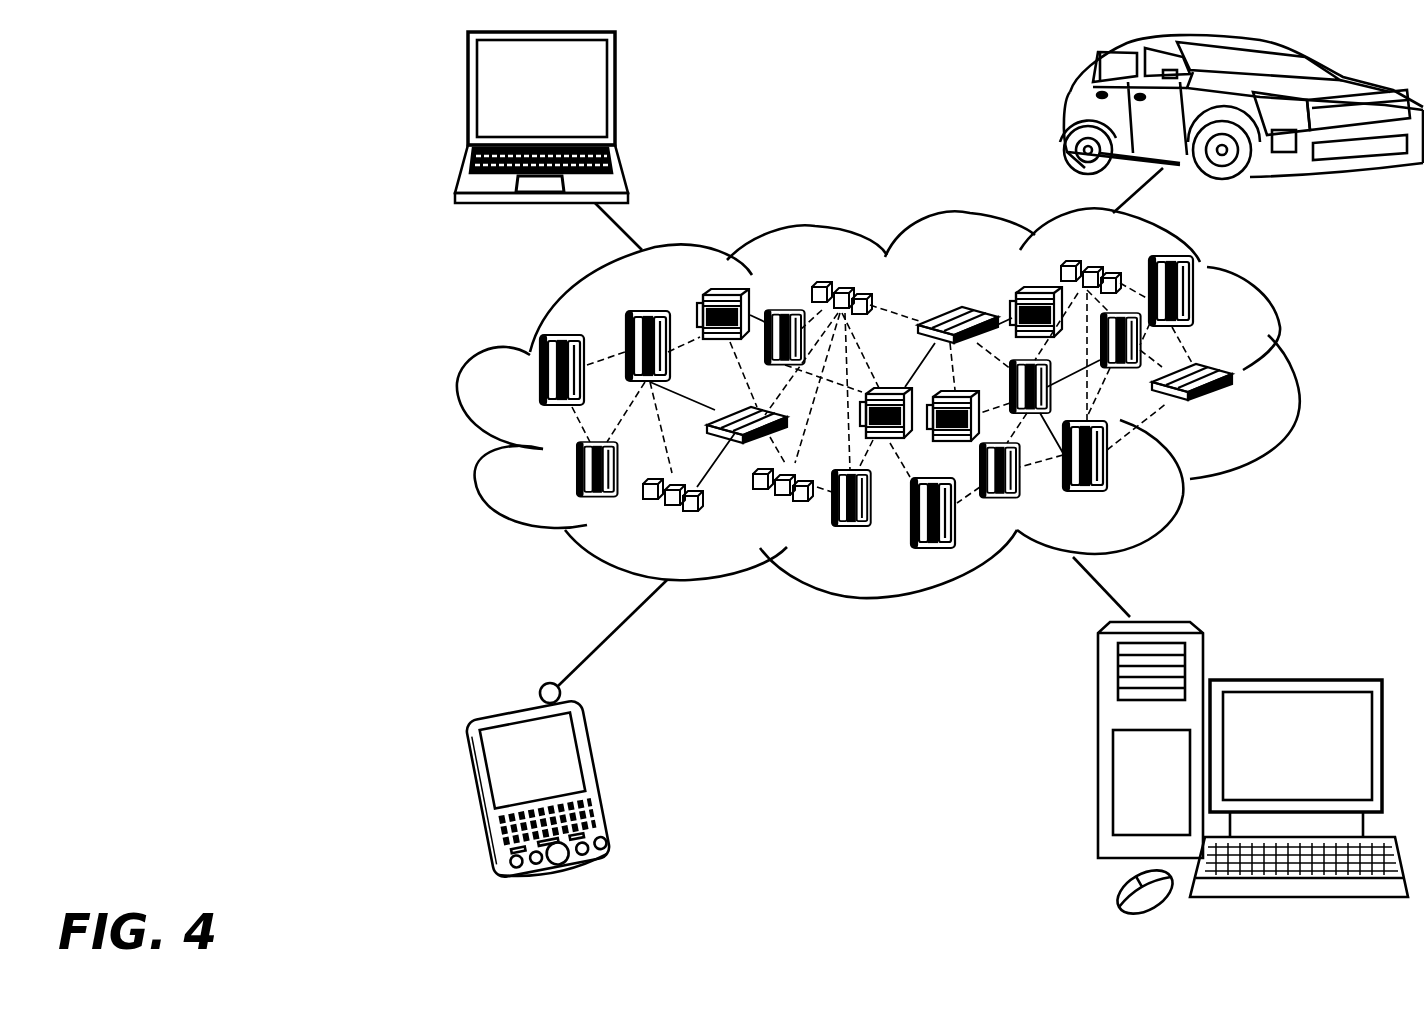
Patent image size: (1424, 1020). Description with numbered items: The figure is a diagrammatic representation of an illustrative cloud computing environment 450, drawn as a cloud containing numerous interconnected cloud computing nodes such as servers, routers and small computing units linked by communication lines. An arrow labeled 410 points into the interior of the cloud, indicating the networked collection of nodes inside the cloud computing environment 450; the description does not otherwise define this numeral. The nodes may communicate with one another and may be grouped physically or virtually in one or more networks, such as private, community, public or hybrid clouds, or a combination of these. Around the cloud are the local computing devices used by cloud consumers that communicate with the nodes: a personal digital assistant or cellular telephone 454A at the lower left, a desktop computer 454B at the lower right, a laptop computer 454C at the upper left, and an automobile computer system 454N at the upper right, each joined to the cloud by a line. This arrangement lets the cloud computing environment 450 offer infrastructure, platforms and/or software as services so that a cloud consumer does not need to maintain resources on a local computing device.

The cloud computing environment 450 is at (918, 403).
The network 410 is at (1248, 413).
The personal digital assistant or cellular telephone 454A is at (603, 778).
The desktop computer 454B is at (1295, 680).
The laptop computer 454C is at (619, 96).
The automobile computer system 454N is at (1068, 110).